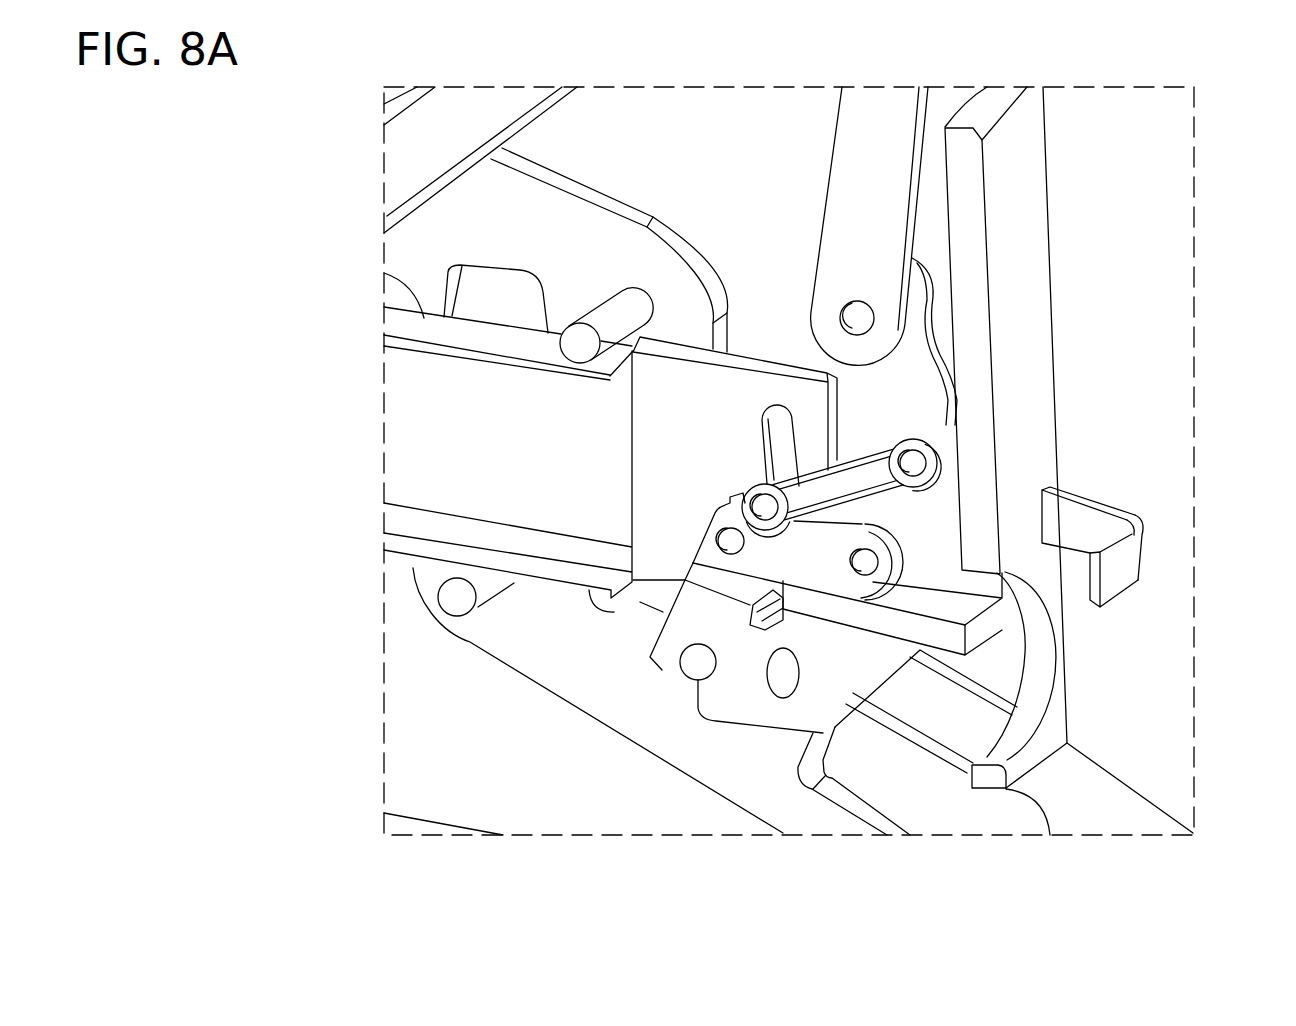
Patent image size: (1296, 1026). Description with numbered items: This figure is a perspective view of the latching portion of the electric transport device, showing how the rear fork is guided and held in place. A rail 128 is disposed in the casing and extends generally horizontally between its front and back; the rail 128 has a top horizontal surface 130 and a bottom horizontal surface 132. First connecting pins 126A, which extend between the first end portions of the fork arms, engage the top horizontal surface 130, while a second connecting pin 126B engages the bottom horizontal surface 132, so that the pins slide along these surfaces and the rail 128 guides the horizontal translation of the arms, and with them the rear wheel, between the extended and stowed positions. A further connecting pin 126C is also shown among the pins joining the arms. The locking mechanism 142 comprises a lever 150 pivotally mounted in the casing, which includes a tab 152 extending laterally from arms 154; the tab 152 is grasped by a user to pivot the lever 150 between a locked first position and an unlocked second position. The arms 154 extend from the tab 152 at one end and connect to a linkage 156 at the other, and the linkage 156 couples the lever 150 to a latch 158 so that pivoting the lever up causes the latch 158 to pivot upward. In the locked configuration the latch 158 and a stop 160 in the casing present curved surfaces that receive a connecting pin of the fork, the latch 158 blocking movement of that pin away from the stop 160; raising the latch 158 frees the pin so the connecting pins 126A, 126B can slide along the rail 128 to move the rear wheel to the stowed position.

The top horizontal surface 130 is at (428, 322).
The rail 128 is at (428, 436).
The first connecting pins 126A is at (575, 345).
The second connecting pin 126B is at (450, 603).
The third roller pin 126C is at (688, 665).
The bottom horizontal surface 132 is at (550, 598).
The stop 160 is at (752, 703).
The latch 158 is at (822, 565).
The linkage 156 is at (818, 455).
The locking mechanism 142 is at (952, 478).
The arms 154 is at (1098, 522).
The tab 152 is at (1122, 583).
The lever 150 is at (1166, 533).